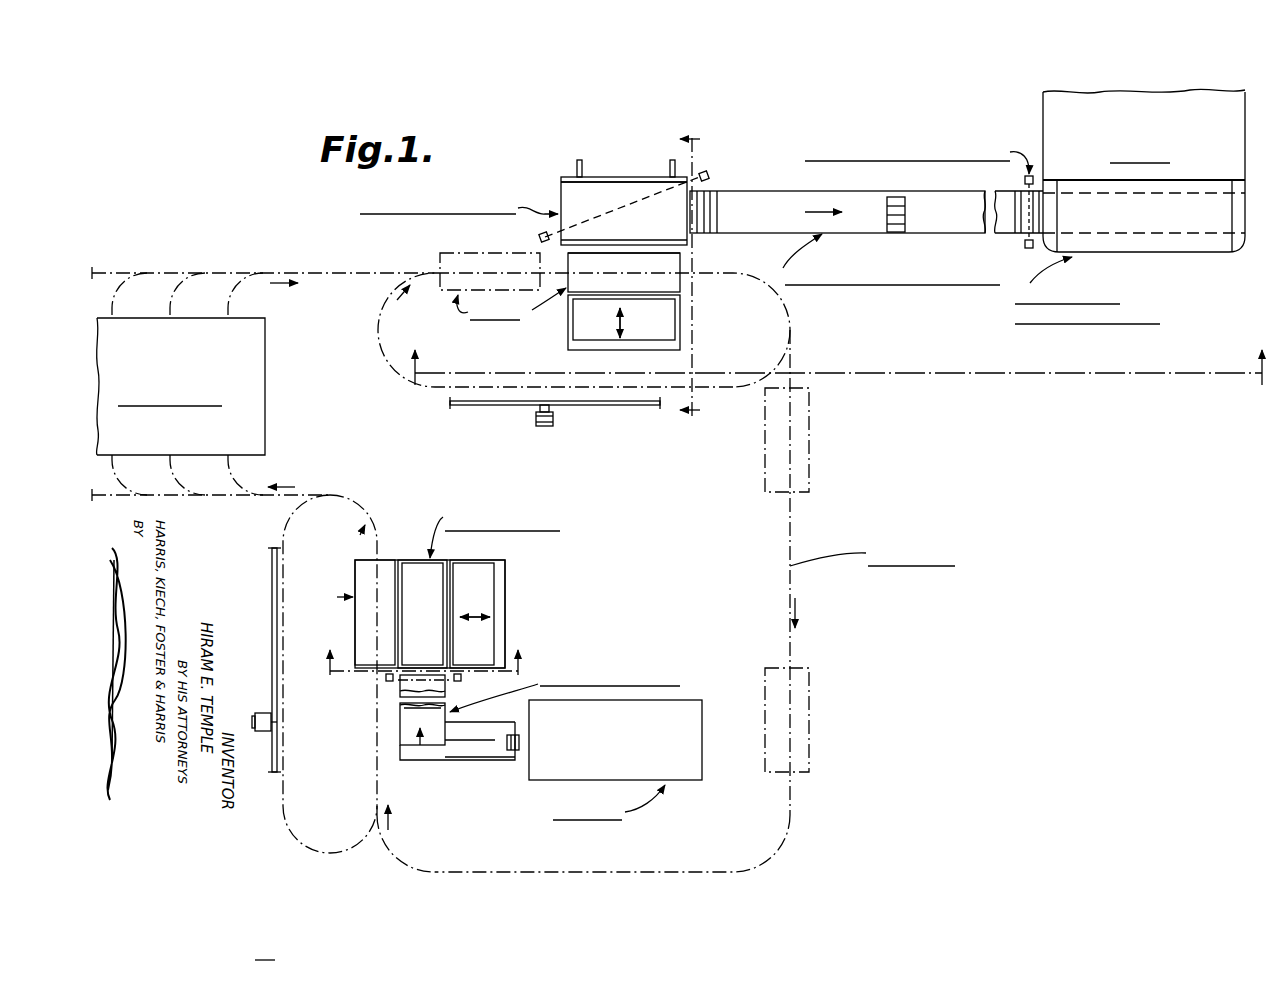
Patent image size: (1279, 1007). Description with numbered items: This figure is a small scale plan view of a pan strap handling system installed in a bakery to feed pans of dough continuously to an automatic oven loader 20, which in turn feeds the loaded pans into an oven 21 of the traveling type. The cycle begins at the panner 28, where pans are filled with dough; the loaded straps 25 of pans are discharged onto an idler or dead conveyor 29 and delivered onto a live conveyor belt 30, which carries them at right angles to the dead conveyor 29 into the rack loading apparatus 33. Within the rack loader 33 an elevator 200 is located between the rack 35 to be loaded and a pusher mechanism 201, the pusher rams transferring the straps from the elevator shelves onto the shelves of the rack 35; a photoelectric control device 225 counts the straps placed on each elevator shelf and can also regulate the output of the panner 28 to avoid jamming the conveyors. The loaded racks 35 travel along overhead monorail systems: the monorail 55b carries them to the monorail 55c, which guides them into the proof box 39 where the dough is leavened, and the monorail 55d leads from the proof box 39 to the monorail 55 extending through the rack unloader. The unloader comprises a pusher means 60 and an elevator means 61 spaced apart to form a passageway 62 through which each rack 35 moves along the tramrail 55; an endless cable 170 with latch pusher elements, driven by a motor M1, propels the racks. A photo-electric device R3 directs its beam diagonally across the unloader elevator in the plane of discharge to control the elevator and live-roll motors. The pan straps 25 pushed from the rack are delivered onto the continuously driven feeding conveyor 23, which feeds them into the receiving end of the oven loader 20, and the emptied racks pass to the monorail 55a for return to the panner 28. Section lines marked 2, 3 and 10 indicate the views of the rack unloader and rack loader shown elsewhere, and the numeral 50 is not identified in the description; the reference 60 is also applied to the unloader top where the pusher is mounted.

The rack unloader 50 is at (617, 162).
The pusher means 60 is at (636, 178).
The photo-electric device R3 is at (540, 238).
The section line 3 is at (699, 274).
The conveyor belt 23 is at (859, 198).
The straps of loaded pans 25 is at (905, 210).
The oven 21 is at (1043, 102).
The automatic oven loader 20 is at (1190, 250).
The monorail 55 is at (418, 392).
The monorail 55a is at (790, 536).
The monorail system 55b is at (323, 851).
The monorail 55c is at (243, 497).
The monorail 55d is at (318, 273).
The section line 2 is at (832, 384).
The rack 35 is at (455, 253).
The passageway 62 is at (688, 250).
The elevator means 61 is at (609, 352).
The endless cable 170 is at (508, 406).
The motor M1 is at (545, 428).
The proof box 39 is at (265, 355).
The elevator 200 is at (410, 562).
The pusher mechanism 201 is at (483, 562).
The rack loading apparatus 33 is at (510, 596).
The section line 10 is at (435, 665).
The photoelectric control device 225 is at (472, 679).
The live conveyor belt 30 is at (400, 725).
The dead conveyor 29 is at (480, 761).
The panner 28 is at (696, 705).